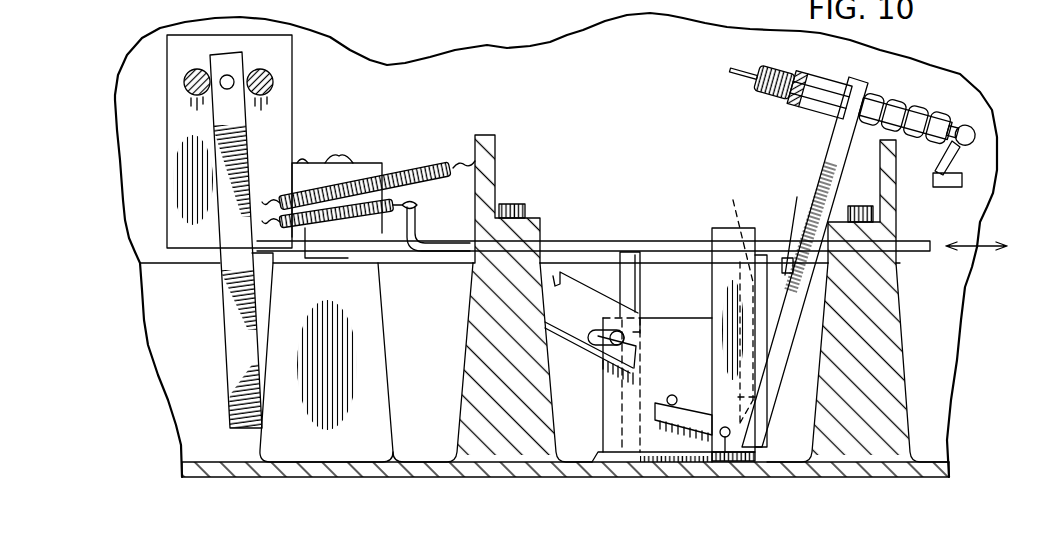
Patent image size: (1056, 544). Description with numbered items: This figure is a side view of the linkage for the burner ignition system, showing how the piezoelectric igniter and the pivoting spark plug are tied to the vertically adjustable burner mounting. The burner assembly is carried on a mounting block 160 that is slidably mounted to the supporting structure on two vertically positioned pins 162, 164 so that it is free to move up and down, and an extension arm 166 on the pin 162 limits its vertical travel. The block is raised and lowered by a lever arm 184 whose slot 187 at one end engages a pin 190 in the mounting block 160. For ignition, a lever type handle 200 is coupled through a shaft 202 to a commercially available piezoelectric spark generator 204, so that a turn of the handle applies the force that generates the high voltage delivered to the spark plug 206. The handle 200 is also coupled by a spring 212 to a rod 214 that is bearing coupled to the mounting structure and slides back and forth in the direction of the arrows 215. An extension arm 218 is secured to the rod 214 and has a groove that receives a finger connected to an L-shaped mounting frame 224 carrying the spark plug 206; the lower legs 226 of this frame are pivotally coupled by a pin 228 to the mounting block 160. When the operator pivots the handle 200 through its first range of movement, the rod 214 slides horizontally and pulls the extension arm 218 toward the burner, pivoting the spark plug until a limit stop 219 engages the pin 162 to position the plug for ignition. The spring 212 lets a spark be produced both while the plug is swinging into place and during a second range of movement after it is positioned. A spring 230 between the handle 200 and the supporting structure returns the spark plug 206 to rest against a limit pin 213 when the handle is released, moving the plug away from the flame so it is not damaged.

The mounting block 160 is at (693, 318).
The pin 162 is at (767, 313).
The pin 164 is at (633, 252).
The extension arm 166 is at (732, 292).
The lever arm 184 is at (592, 313).
The slot 187 is at (592, 345).
The pin 190 is at (607, 335).
The lever type handle 200 is at (247, 128).
The shaft 202 is at (243, 62).
The piezoelectric spark generator 204 is at (167, 97).
The spark plug 206 is at (898, 120).
The spring 212 is at (347, 203).
The limit pin 213 is at (672, 394).
The rod 214 is at (560, 241).
The arrows 215 is at (988, 240).
The extension arm 218 is at (712, 228).
The limit stop 219 is at (793, 241).
The L-shaped mounting frame 224 is at (826, 162).
The lower legs 226 is at (687, 420).
The pin 228 is at (725, 462).
The spring 230 is at (440, 158).